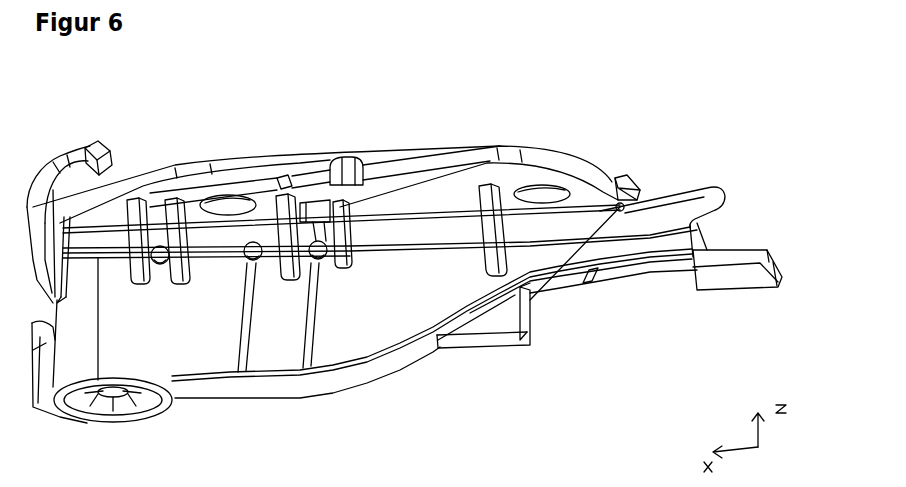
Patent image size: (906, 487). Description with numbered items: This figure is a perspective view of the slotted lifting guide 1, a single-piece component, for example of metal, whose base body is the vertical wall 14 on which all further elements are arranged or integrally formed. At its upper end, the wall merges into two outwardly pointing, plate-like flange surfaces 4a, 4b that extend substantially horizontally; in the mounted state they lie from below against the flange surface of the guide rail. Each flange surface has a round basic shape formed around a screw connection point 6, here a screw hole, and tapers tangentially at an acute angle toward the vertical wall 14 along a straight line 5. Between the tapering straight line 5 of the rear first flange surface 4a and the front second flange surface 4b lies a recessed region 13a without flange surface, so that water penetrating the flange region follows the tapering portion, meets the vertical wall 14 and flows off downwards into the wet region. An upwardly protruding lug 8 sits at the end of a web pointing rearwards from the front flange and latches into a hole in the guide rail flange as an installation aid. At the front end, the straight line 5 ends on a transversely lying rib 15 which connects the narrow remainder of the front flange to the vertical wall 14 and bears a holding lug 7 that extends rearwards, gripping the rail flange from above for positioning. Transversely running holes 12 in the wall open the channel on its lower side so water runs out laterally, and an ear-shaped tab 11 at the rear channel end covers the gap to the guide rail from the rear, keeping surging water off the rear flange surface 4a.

The slotted lifting guide 1 is at (643, 267).
The first flange surface 4a is at (582, 180).
The second flange surface 4b is at (217, 190).
The straight line 5 is at (157, 188).
The screw connection point 6 is at (423, 198).
The holding lug 7 is at (80, 158).
The lug 8 is at (330, 155).
The tab 11 is at (703, 193).
The holes 12 is at (480, 253).
The recessed region 13a is at (330, 263).
The vertical wall 14 is at (460, 345).
The rib 15 is at (63, 260).